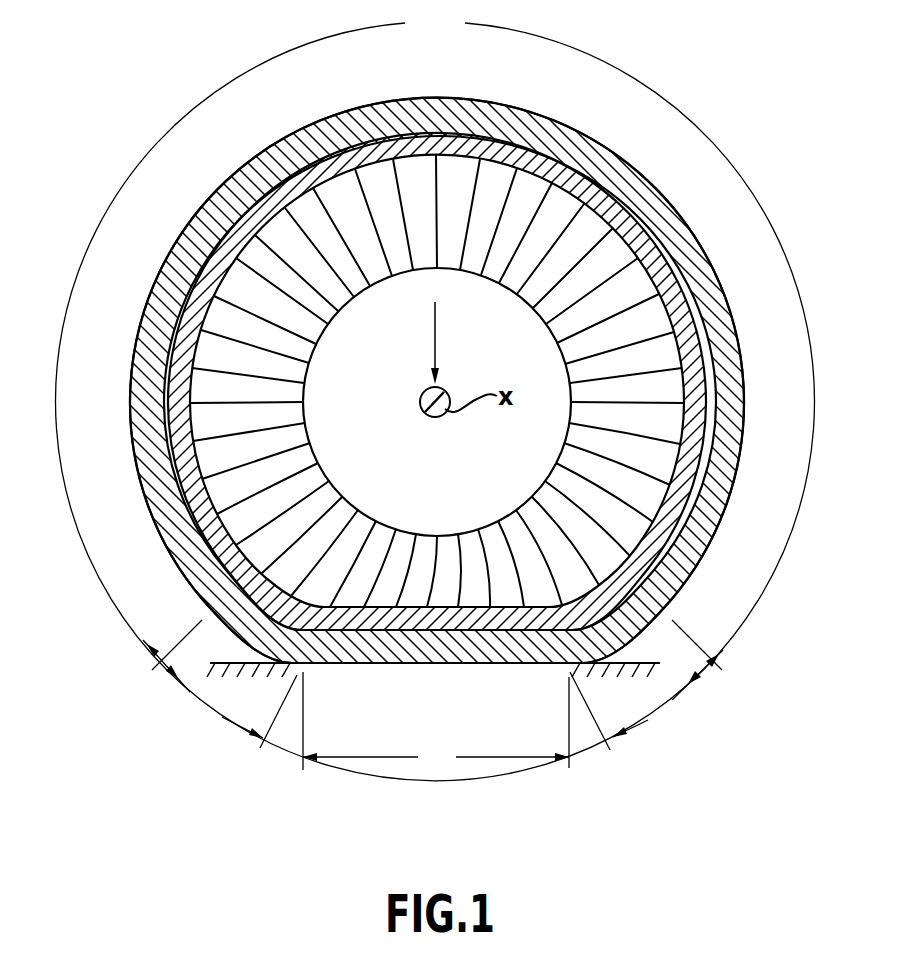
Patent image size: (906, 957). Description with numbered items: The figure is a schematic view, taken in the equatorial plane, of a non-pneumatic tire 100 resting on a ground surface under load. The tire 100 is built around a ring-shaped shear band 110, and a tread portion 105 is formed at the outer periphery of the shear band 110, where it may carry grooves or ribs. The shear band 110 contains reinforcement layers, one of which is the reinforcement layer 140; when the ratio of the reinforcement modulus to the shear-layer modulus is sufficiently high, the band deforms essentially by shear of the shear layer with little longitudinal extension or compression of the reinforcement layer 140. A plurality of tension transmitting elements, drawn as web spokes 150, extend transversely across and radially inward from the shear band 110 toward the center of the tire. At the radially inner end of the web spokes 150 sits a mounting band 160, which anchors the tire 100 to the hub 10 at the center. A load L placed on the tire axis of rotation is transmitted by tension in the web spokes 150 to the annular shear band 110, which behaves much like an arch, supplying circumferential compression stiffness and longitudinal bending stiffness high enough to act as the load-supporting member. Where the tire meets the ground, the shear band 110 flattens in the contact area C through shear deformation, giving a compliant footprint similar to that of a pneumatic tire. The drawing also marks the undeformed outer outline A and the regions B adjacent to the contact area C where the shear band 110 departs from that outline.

The tire 100 is at (158, 102).
The tread portion 105 is at (325, 115).
The shear band 110 is at (413, 145).
The reinforcement layer 140 is at (191, 584).
The web spokes 150 is at (251, 312).
The mounting band 160 is at (305, 408).
The hub 10 is at (437, 402).
The undeformed outer diameter A is at (435, 394).
The deflection region B is at (433, 685).
The contact area C is at (436, 724).
The load L is at (435, 318).